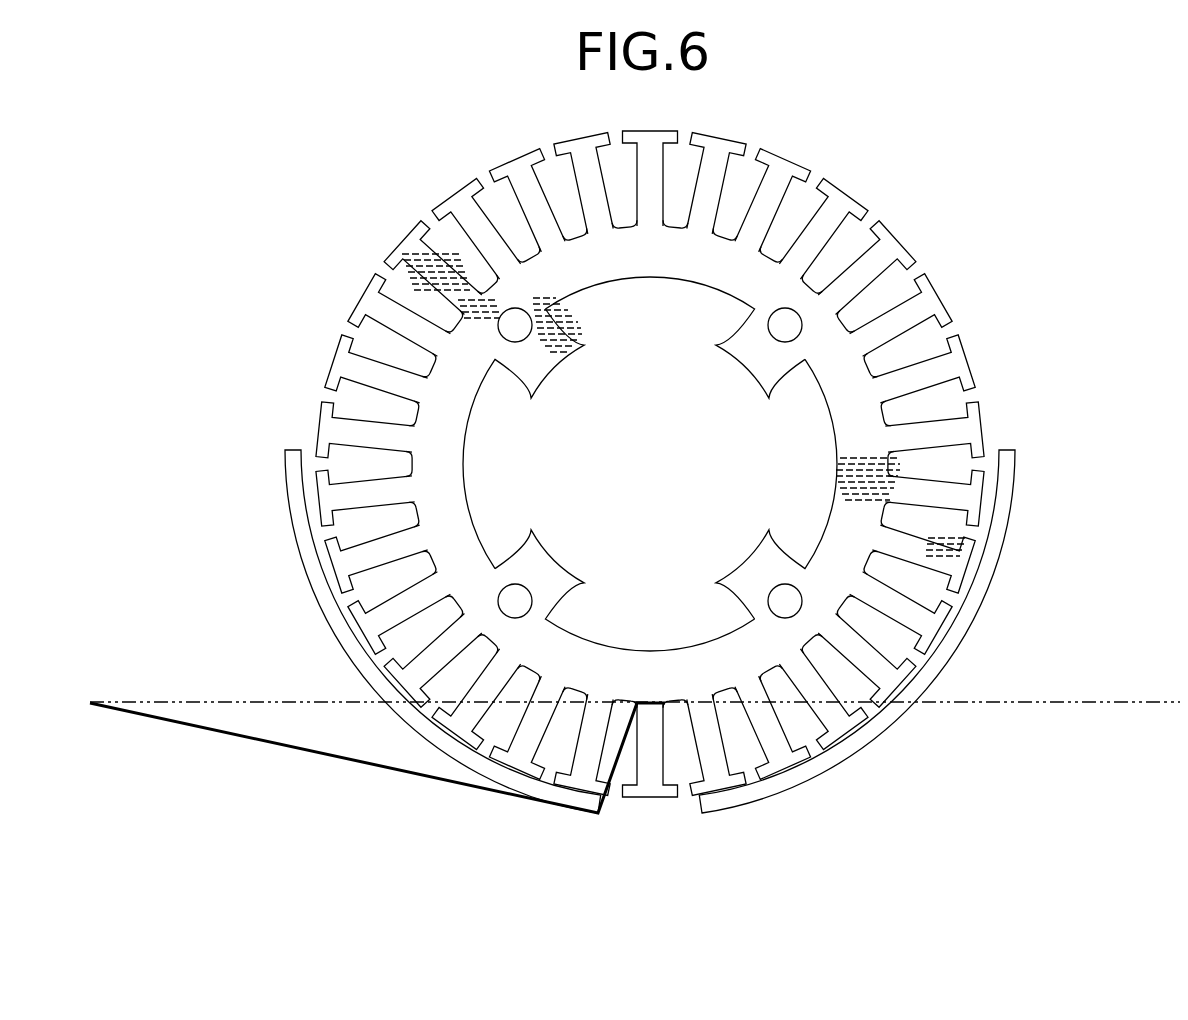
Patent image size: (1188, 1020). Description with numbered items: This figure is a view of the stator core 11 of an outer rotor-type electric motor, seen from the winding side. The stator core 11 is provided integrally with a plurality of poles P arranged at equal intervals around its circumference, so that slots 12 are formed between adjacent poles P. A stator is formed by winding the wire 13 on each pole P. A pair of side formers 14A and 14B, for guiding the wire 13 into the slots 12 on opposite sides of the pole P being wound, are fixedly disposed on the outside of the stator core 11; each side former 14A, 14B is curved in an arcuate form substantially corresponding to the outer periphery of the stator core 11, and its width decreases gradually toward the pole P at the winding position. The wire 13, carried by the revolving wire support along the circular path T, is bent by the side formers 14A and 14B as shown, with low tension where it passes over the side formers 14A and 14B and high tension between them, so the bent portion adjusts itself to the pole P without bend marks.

The stator core 11 is at (692, 262).
The slots 12 is at (668, 712).
The wire 13 is at (428, 777).
The side former 14A is at (323, 592).
The side former 14B is at (977, 592).
The circular path T is at (1100, 702).
The poles P is at (713, 775).